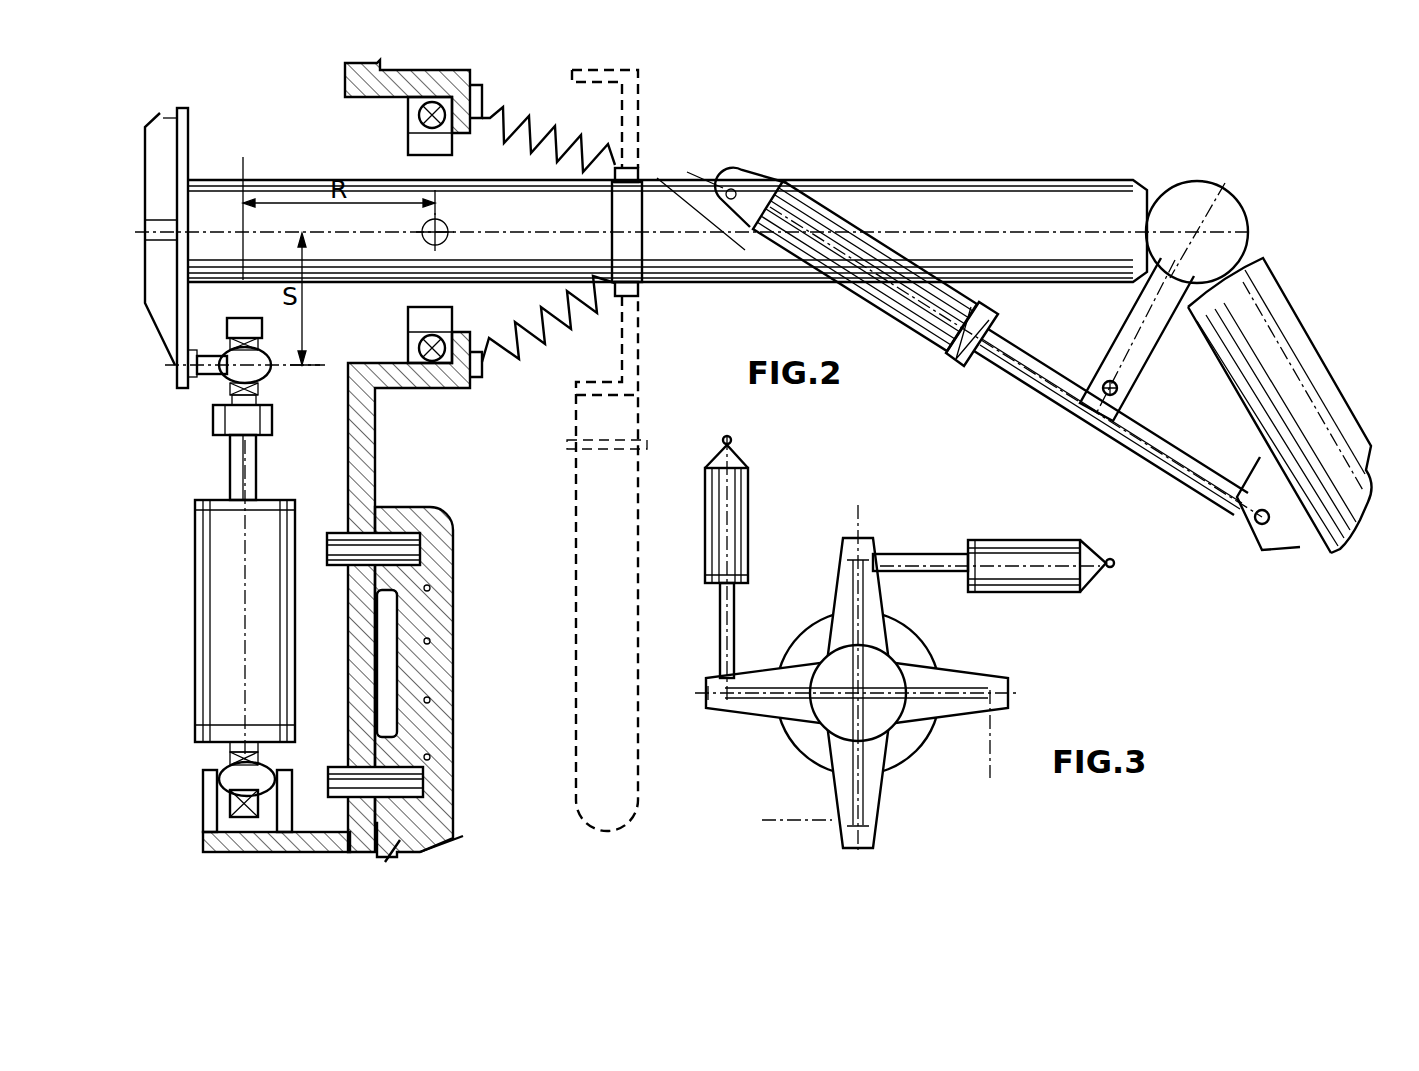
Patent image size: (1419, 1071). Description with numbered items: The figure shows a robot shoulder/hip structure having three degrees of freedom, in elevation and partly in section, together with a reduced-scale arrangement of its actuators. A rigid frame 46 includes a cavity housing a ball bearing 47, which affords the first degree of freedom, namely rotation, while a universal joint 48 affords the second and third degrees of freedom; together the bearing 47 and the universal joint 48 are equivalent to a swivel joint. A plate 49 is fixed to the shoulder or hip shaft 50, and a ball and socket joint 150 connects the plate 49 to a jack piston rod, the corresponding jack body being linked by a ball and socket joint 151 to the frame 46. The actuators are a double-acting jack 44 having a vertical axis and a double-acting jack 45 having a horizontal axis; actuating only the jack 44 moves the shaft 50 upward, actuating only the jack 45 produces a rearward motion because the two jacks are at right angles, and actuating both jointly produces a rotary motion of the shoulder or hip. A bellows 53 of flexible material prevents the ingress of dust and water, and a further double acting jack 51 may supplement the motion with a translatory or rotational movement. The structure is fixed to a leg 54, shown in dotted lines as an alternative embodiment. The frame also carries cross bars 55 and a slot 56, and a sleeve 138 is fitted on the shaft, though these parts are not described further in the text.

In FIG. 2, the double-acting jack 44 is at (230, 615).
In FIG. 3, the double-acting jack 44 is at (737, 545).
In FIG. 3, the double-acting jack 45 is at (1027, 556).
In FIG. 2, the rigid frame 46 is at (362, 83).
In FIG. 2, the ball bearing 47 is at (410, 118).
In FIG. 2, the universal joint 48 is at (436, 318).
In FIG. 2, the plate 49 is at (190, 156).
In FIG. 3, the plate 49 is at (943, 640).
In FIG. 2, the shoulder or hip shaft 50 is at (362, 270).
In FIG. 2, the double acting jack 51 is at (868, 292).
In FIG. 2, the bellows 53 is at (578, 152).
In FIG. 2, the leg 54 is at (935, 188).
In FIG. 3, the leg 54 is at (808, 762).
In FIG. 2, the cross bar 55 is at (388, 540).
In FIG. 2, the slot 56 is at (395, 650).
In FIG. 2, the sleeve 138 is at (633, 353).
In FIG. 2, the ball and socket joint 150 is at (262, 378).
In FIG. 3, the ball and socket joint 150 is at (860, 556).
In FIG. 2, the ball and socket joint 151 is at (230, 780).
In FIG. 3, the ball and socket joint 151 is at (733, 442).